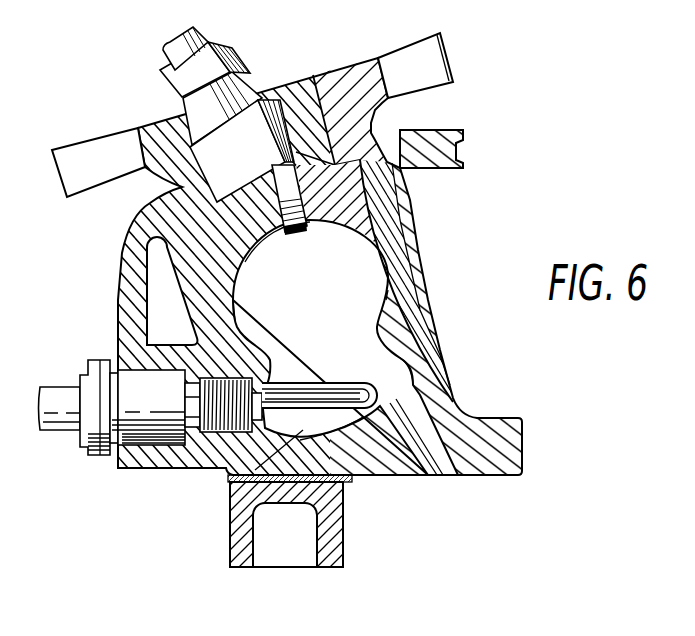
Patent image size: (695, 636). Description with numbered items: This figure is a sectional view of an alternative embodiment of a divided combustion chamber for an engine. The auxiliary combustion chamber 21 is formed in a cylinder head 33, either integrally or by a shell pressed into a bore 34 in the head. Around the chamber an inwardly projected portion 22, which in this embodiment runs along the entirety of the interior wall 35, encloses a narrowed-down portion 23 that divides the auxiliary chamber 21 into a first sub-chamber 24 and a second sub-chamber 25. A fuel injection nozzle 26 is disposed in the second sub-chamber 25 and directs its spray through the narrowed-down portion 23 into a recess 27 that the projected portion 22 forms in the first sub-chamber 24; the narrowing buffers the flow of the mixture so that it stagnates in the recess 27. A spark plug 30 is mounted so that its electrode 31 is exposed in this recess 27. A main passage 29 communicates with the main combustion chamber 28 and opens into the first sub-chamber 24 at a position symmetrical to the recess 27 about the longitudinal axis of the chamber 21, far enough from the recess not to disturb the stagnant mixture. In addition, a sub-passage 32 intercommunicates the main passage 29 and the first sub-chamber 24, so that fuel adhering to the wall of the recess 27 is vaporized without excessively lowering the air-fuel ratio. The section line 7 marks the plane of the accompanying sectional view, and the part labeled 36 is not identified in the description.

The section line 7- 7 is at (259, 307).
The auxiliary combustion chamber 21 is at (324, 346).
The projected portion 22 is at (430, 302).
The narrowed-down portion 23 is at (343, 340).
The first sub-chamber 24 is at (371, 371).
The second sub-chamber 25 is at (320, 261).
The fuel injection nozzle 26 is at (283, 150).
The recess 27 is at (410, 373).
The main combustion chamber 28 is at (382, 518).
The main passage 29 is at (402, 476).
The spark plug 30 is at (122, 469).
The electrode 31 is at (386, 406).
The sub-passage 32 is at (398, 436).
The cylinder head 33 is at (399, 214).
The bore 34 is at (447, 138).
The interior wall 35 is at (205, 236).
The chamber side wall 36 is at (234, 293).